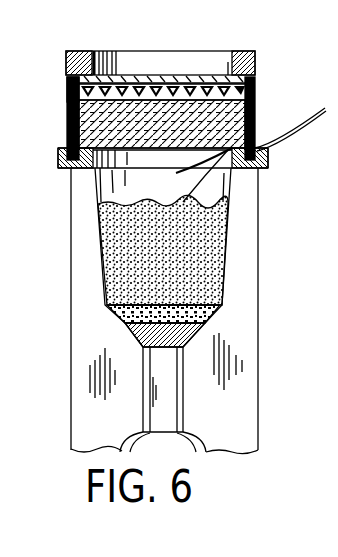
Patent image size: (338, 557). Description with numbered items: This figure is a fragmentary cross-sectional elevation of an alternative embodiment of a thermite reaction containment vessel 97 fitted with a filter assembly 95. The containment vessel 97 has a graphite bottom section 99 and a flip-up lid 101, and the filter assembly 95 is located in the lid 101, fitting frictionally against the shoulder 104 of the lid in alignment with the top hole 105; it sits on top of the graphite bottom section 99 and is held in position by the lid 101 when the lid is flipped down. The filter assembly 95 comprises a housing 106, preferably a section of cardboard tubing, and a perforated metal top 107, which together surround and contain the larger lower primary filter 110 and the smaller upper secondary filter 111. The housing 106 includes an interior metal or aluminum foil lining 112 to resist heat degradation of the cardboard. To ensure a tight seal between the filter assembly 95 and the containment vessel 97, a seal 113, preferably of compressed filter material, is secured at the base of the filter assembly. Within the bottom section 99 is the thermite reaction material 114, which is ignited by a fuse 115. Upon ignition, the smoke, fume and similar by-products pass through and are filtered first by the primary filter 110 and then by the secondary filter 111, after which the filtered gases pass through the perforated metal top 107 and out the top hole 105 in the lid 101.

The filter assembly 95 is at (256, 90).
The thermite reaction containment vessel 97 is at (262, 366).
The graphite bottom section 99 is at (247, 235).
The flip-up lid 101 is at (240, 52).
The shoulder 104 is at (230, 73).
The top hole 105 is at (127, 63).
The housing 106 is at (180, 148).
The perforated metal top 107 is at (167, 76).
The primary filter 110 is at (68, 130).
The secondary filter 111 is at (68, 94).
The interior metal or aluminum foil lining 112 is at (196, 175).
The seal 113 is at (268, 165).
The thermite reaction material 114 is at (207, 278).
The fuse 115 is at (318, 122).